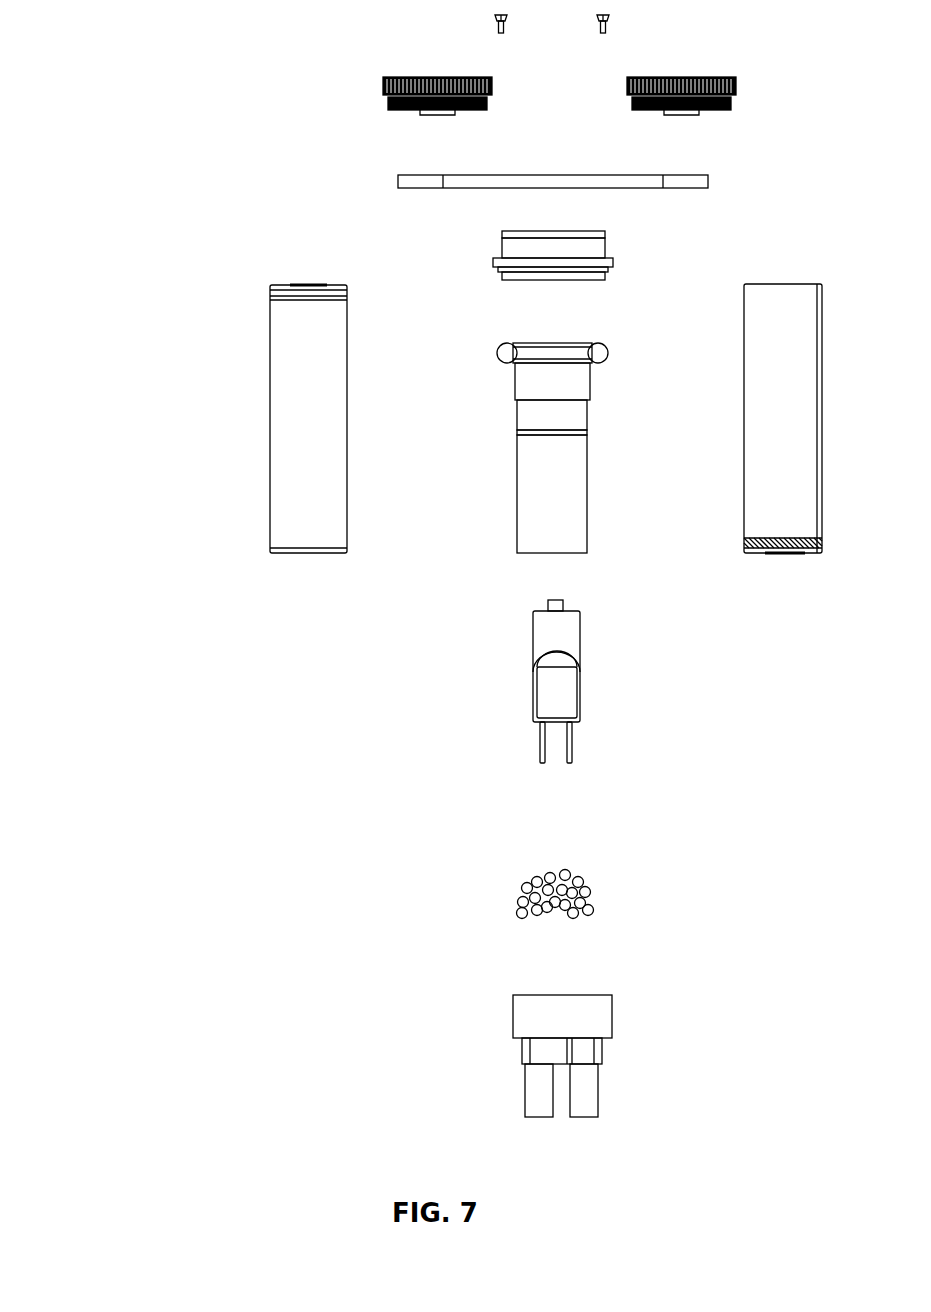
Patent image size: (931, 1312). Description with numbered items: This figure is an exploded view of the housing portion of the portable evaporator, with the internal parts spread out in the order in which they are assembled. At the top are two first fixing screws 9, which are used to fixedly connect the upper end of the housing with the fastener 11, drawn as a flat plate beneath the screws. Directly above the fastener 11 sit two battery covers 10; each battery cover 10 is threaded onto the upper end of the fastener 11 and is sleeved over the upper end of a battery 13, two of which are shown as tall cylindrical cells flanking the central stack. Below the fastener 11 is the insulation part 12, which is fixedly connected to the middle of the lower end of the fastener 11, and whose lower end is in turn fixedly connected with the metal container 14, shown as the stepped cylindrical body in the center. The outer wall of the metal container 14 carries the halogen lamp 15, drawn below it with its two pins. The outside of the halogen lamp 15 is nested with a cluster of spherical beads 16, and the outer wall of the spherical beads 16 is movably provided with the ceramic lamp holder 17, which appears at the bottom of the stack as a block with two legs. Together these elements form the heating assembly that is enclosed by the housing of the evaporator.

The first fixing screw 9 is at (440, 24).
The battery cover 10 is at (383, 93).
The fastener 11 is at (388, 183).
The insulation part 12 is at (492, 248).
The battery 13 is at (245, 353).
The metal container 14 is at (515, 487).
The halogen lamp 15 is at (517, 675).
The spherical beads 16 is at (483, 893).
The ceramic lamp holder 17 is at (472, 1048).